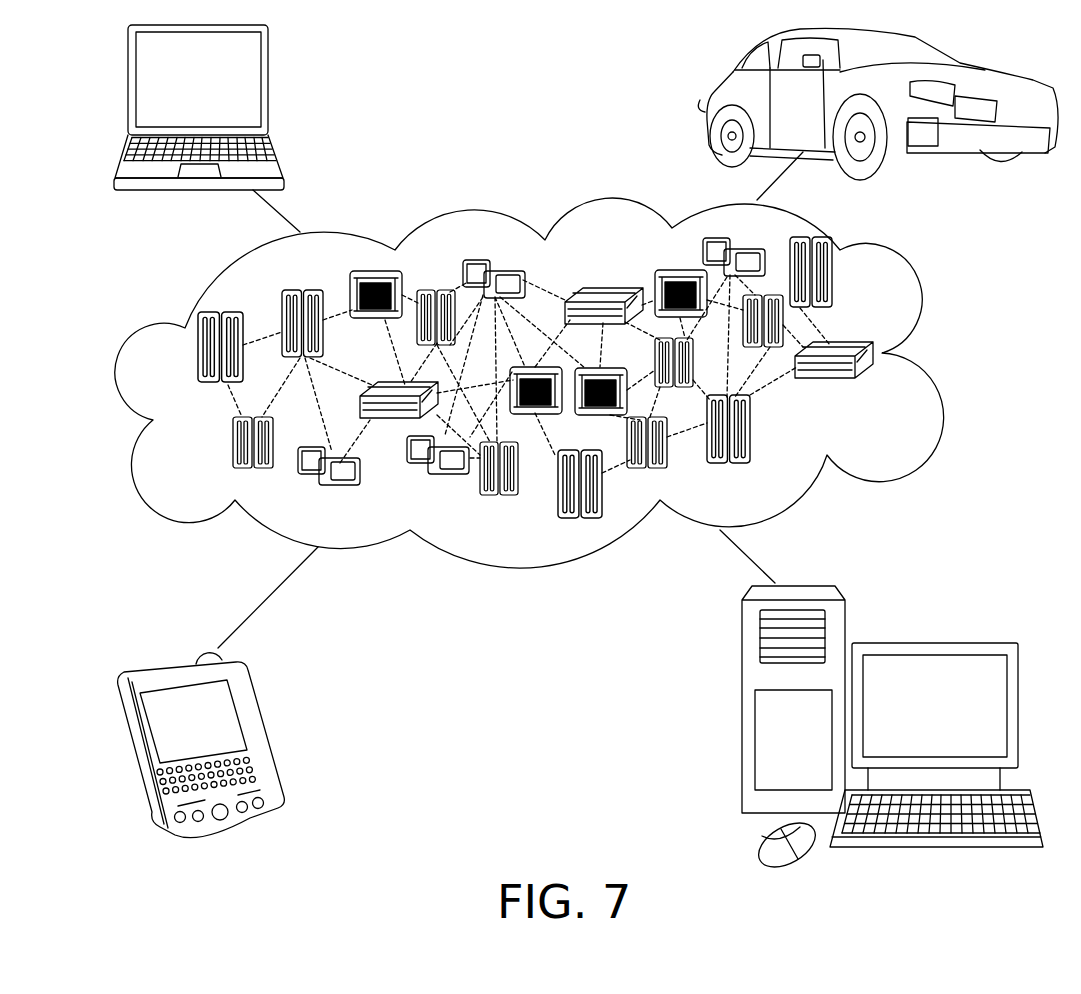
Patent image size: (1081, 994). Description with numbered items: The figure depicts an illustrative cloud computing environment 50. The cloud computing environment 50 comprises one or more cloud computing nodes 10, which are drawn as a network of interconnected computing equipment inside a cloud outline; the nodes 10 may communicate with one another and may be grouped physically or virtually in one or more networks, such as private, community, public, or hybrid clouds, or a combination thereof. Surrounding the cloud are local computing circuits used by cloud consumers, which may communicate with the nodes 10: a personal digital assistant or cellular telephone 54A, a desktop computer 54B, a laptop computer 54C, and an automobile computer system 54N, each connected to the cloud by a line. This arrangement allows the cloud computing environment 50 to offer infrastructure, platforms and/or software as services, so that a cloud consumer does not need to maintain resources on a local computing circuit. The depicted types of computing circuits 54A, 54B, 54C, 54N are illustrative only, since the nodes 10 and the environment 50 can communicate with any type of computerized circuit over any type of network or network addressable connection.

The cloud computing node 10 is at (555, 383).
The cloud computing environment 50 is at (938, 355).
The personal digital assistant or cellular telephone 54A is at (257, 735).
The desktop computer 54B is at (930, 643).
The laptop computer 54C is at (270, 88).
The automobile computer system 54N is at (715, 104).